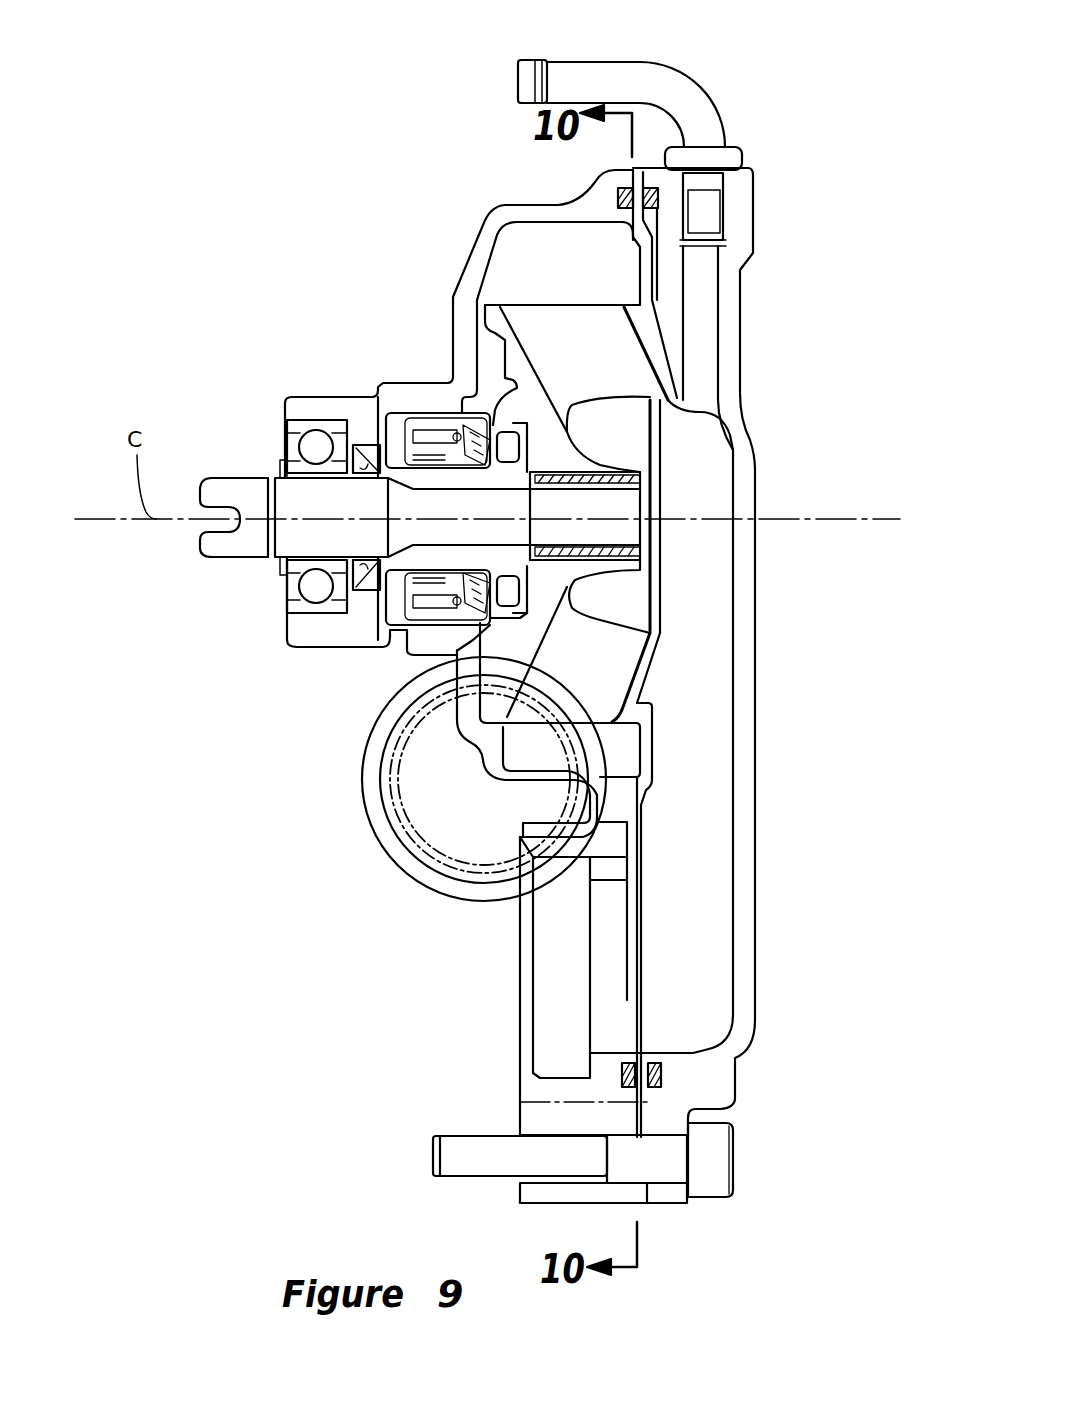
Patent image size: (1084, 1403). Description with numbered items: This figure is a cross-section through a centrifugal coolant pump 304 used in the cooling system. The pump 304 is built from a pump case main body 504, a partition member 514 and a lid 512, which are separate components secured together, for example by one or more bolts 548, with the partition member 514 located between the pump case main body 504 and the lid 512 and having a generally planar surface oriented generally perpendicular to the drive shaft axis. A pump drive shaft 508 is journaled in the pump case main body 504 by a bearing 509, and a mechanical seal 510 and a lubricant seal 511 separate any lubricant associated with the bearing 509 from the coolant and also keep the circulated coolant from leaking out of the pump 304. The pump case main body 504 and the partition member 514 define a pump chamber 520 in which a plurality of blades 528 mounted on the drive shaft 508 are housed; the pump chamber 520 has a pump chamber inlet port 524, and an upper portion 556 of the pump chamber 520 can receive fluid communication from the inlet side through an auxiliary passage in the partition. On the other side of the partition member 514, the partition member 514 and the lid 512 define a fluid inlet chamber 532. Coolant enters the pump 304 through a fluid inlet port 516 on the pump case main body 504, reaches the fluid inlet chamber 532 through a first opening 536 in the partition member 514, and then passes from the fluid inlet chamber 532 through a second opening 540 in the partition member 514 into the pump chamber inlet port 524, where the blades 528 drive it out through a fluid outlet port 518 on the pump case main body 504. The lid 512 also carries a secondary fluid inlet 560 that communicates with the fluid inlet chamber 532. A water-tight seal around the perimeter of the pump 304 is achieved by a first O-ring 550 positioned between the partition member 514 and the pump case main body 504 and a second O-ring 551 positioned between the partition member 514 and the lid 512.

The pump 304 is at (392, 300).
The pump case main body 504 is at (455, 350).
The pump drive shaft 508 is at (253, 493).
The bearing 509 is at (287, 584).
The mechanical seal 510 is at (495, 590).
The lubricant seal 511 is at (367, 590).
The lid 512 is at (747, 493).
The partition member 514 is at (647, 300).
The fluid inlet port 516 is at (520, 1008).
The fluid outlet port 518 is at (440, 810).
The pump chamber 520 is at (623, 748).
The pump chamber inlet port 524 is at (637, 594).
The blades 528 is at (590, 352).
The fluid inlet chamber 532 is at (720, 680).
The first opening 536 is at (643, 830).
The second opening 540 is at (680, 405).
The bolts 548 is at (717, 1147).
The first O-ring 550 is at (620, 200).
The second O-ring 551 is at (662, 192).
The upper portion of the pump chamber 556 is at (523, 261).
The secondary fluid inlet 560 is at (575, 78).